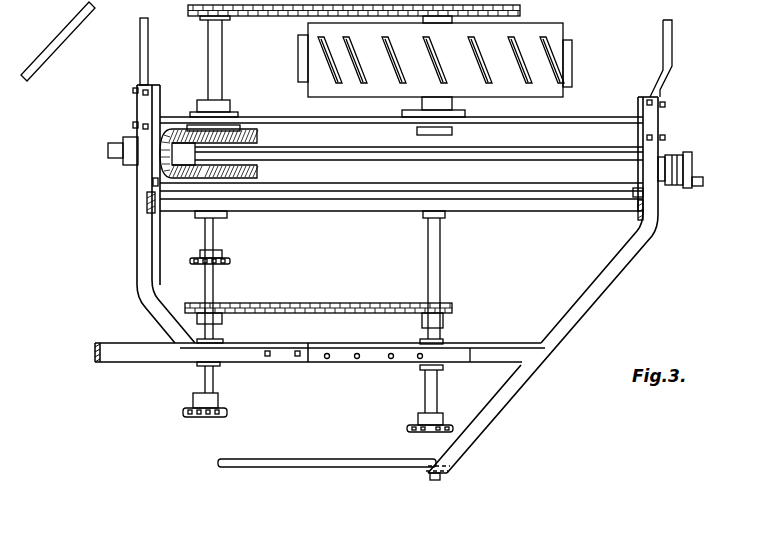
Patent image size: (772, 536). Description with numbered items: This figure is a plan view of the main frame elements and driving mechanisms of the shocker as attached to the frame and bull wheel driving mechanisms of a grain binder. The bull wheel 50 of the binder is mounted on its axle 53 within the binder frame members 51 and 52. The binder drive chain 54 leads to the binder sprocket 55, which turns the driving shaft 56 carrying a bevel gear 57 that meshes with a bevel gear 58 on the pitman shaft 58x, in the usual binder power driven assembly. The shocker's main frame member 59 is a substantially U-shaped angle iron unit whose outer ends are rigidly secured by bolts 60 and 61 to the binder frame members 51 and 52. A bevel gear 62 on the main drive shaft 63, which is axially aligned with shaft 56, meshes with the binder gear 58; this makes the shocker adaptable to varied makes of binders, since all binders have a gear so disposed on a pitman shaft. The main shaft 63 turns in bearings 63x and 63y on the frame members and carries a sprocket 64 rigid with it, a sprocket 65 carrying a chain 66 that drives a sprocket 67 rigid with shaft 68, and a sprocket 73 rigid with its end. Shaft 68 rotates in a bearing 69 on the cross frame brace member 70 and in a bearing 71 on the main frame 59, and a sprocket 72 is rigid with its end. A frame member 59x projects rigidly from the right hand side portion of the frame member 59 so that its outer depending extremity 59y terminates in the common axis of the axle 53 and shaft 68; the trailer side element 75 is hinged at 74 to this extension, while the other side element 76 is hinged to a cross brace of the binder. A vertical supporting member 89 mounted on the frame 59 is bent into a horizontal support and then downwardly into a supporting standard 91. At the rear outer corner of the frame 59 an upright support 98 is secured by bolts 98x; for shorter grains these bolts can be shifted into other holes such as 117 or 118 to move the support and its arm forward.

The bull wheel 50 is at (565, 35).
The binder frame member 51 is at (148, 50).
The binder frame member 52 is at (673, 45).
The axle 53 is at (450, 105).
The drive chain 54 is at (312, 13).
The binder sprocket 55 is at (206, 18).
The driving shaft 56 is at (222, 45).
The bevel gear 57 is at (258, 135).
The bevel gear 58 is at (165, 155).
The pitman shaft 58x is at (348, 157).
The main frame member 59 is at (643, 271).
The frame member 59x is at (500, 403).
The depending extremity 59y is at (423, 474).
The bolt 60 is at (130, 128).
The bolt 61 is at (667, 138).
The bevel gear 62 is at (258, 173).
The main drive shaft 63 is at (215, 233).
The bearing 63x is at (200, 214).
The bearing 63y is at (222, 340).
The sprocket 64 is at (231, 258).
The sprocket 65 is at (214, 316).
The chain 66 is at (330, 305).
The sprocket 67 is at (438, 318).
The shaft 68 is at (441, 263).
The bearing 69 is at (443, 214).
The cross frame brace member 70 is at (567, 211).
The bearing 71 is at (447, 345).
The sprocket 72 is at (408, 432).
The sprocket 73 is at (218, 402).
The hinge 74 is at (439, 479).
The side element 75 is at (300, 467).
The side element 76 is at (58, 36).
The vertical supporting member 89 is at (645, 212).
The supporting standard 91 is at (147, 213).
The upright support 98 is at (127, 352).
The bolt 98x is at (267, 357).
The hole 117 is at (357, 360).
The hole 118 is at (467, 375).